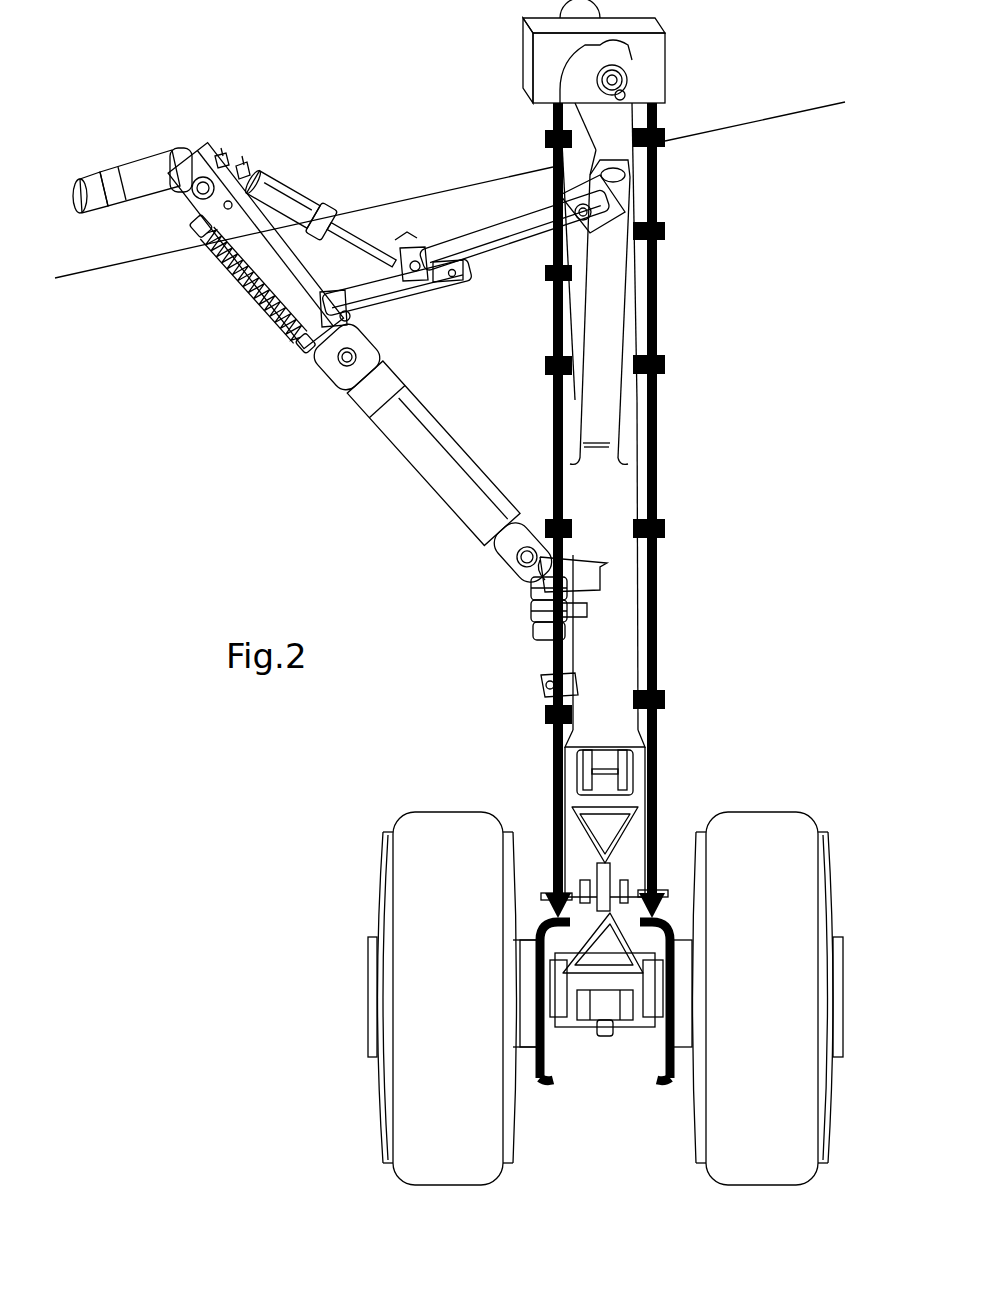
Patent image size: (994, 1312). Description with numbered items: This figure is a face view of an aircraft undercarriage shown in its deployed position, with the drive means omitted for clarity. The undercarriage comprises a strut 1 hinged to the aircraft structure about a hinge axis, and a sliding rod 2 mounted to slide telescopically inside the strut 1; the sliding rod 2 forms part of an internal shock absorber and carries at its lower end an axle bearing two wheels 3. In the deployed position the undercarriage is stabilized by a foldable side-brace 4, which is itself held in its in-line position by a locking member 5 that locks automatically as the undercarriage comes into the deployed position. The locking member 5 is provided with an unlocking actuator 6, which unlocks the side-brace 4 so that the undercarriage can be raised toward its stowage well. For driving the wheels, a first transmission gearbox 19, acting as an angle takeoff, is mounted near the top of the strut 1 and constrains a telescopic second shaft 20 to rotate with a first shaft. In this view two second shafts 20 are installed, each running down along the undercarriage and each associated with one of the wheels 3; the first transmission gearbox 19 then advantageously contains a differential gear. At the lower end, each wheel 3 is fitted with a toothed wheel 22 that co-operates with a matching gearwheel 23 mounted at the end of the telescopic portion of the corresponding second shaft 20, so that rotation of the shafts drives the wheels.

The strut 1 is at (613, 642).
The sliding rod 2 is at (582, 867).
The wheels 3 is at (428, 820).
The foldable side-brace 4 is at (370, 435).
The locking member 5 is at (433, 305).
The unlocking actuator 6 is at (300, 222).
The first transmission gearbox 19 is at (532, 49).
The telescopic second shaft 20 is at (550, 408).
The toothed wheel 22 is at (653, 1070).
The gearwheel 23 is at (547, 917).